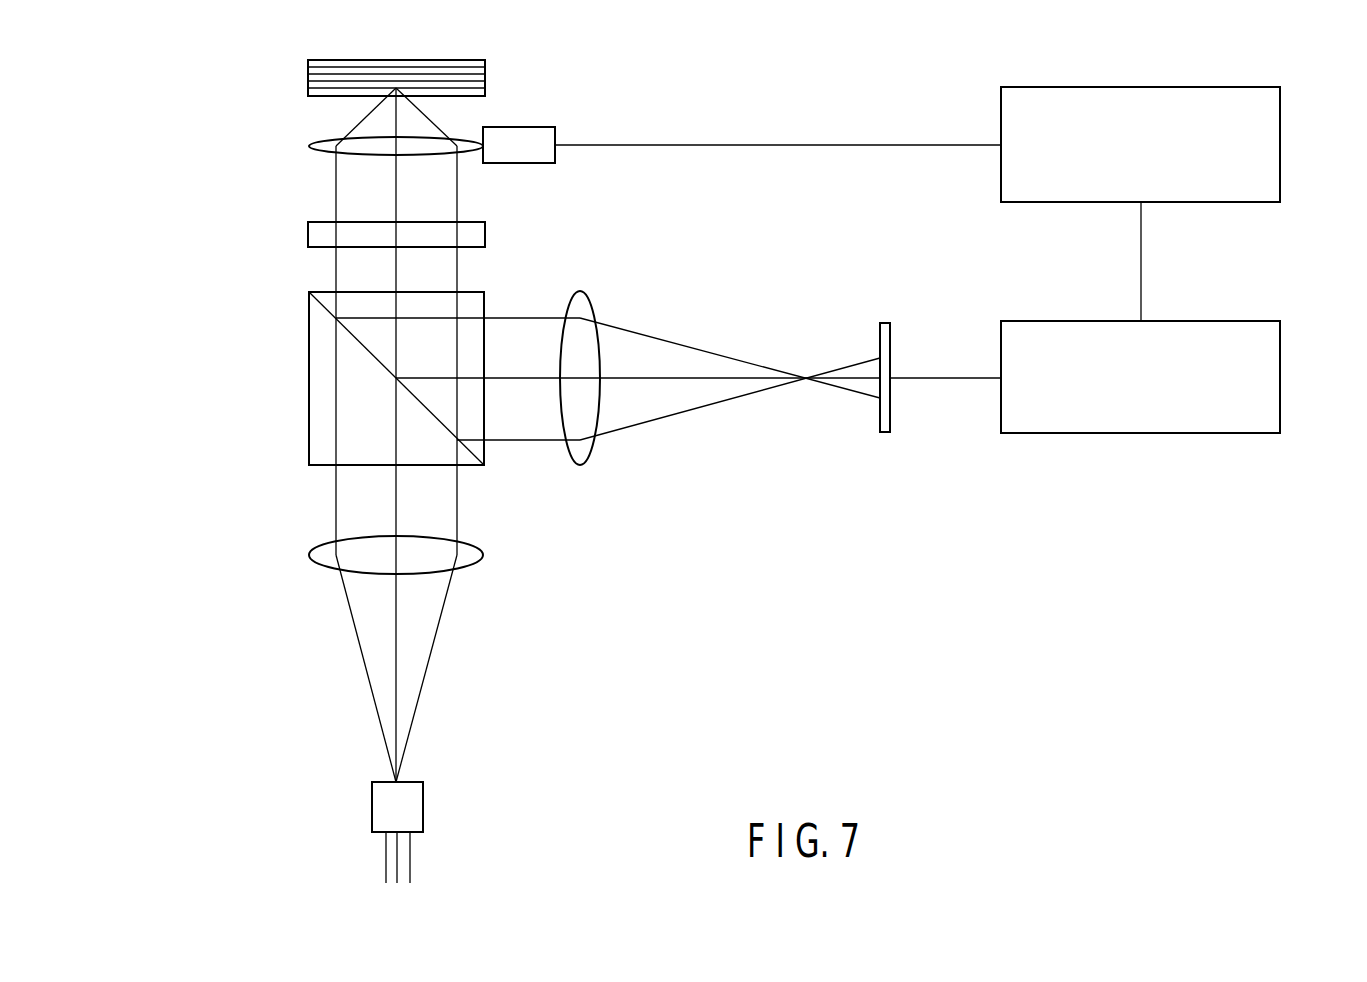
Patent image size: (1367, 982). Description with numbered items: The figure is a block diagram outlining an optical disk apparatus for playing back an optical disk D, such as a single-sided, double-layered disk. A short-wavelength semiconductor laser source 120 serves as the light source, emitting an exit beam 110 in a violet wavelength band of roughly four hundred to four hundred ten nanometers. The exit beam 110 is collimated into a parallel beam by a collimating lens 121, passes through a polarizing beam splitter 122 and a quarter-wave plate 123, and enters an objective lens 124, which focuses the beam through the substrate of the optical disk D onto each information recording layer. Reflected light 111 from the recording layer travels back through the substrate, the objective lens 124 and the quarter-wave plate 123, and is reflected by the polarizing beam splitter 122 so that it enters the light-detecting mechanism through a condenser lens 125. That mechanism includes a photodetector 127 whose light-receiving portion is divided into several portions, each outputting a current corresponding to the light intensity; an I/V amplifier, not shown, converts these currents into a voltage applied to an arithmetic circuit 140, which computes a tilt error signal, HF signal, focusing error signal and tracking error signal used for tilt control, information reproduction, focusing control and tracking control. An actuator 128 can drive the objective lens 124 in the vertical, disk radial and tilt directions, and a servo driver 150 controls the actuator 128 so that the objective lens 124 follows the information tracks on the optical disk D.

The optical disk D is at (485, 63).
The exit beam 110 is at (415, 724).
The reflected light 111 is at (531, 441).
The semiconductor laser source 120 is at (372, 802).
The collimating lens 121 is at (309, 555).
The polarizing beam splitter 122 is at (309, 350).
The λ/4 plate 123 is at (308, 234).
The objective lens 124 is at (308, 145).
The condenser lens 125 is at (580, 291).
The photodetector 127 is at (883, 322).
The actuator 128 is at (555, 128).
The arithmetic circuit 140 is at (1280, 345).
The servo driver 150 is at (1280, 115).